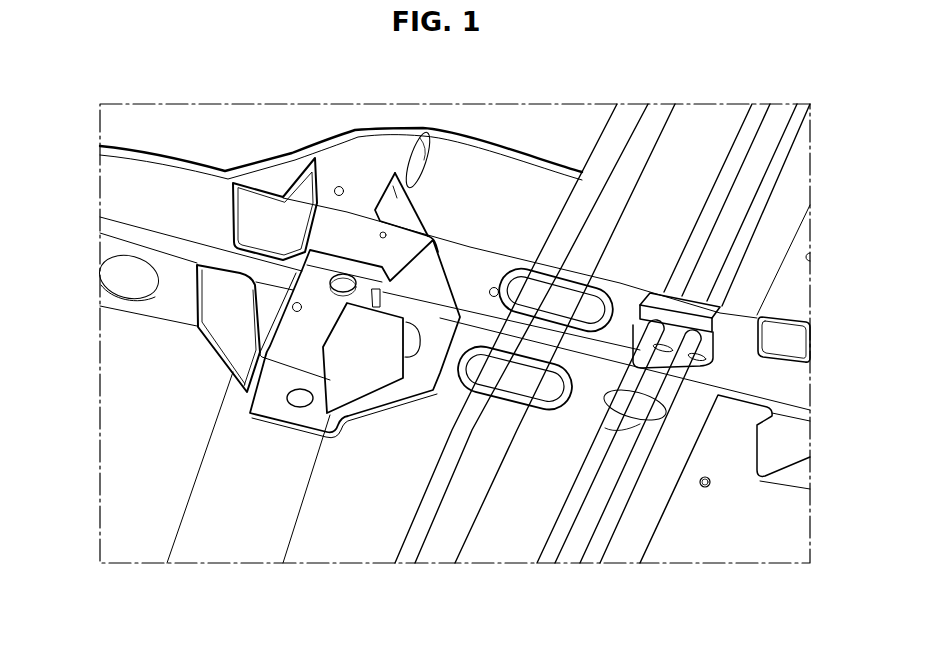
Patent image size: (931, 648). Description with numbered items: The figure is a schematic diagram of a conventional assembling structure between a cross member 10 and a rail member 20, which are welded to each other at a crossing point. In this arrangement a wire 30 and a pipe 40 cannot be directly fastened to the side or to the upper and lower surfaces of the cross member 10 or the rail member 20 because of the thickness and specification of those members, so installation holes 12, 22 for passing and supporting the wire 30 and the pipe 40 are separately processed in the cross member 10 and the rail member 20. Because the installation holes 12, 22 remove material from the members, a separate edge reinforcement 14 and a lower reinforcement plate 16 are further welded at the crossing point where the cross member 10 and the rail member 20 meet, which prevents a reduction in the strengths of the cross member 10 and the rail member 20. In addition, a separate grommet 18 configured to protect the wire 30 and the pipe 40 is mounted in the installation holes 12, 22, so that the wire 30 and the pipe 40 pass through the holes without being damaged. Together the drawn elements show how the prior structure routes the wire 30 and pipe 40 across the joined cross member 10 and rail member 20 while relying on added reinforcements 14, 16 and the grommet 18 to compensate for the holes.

The cross member 10 is at (470, 245).
The installation hole 12 is at (405, 200).
The edge reinforcement 14 is at (276, 178).
The lower reinforcement plate 16 is at (385, 400).
The grommet 18 is at (648, 290).
The rail member 20 is at (192, 488).
The installation hole 22 is at (640, 408).
The wire 30 is at (540, 167).
The pipe 40 is at (448, 545).